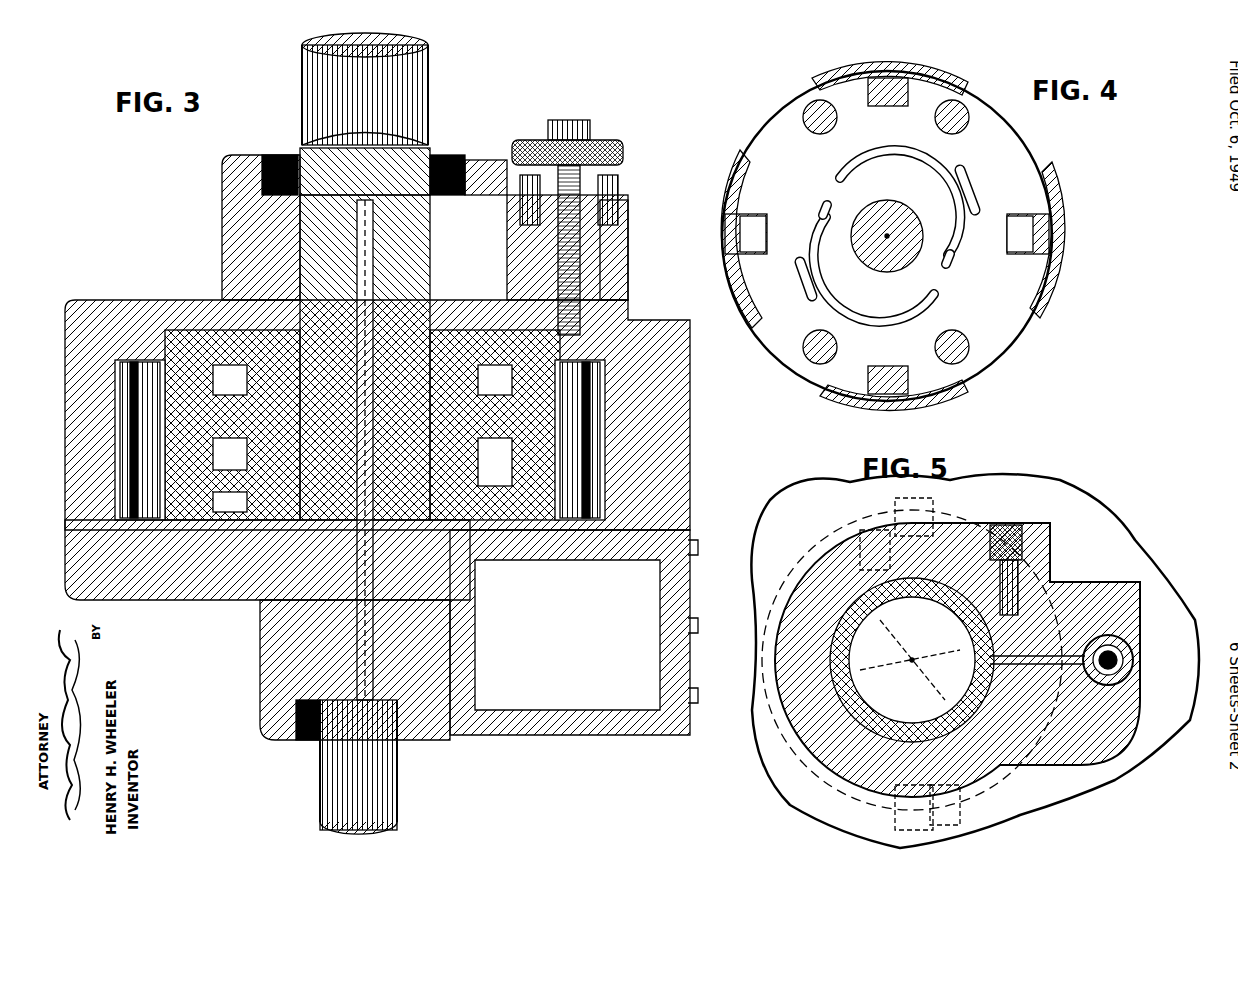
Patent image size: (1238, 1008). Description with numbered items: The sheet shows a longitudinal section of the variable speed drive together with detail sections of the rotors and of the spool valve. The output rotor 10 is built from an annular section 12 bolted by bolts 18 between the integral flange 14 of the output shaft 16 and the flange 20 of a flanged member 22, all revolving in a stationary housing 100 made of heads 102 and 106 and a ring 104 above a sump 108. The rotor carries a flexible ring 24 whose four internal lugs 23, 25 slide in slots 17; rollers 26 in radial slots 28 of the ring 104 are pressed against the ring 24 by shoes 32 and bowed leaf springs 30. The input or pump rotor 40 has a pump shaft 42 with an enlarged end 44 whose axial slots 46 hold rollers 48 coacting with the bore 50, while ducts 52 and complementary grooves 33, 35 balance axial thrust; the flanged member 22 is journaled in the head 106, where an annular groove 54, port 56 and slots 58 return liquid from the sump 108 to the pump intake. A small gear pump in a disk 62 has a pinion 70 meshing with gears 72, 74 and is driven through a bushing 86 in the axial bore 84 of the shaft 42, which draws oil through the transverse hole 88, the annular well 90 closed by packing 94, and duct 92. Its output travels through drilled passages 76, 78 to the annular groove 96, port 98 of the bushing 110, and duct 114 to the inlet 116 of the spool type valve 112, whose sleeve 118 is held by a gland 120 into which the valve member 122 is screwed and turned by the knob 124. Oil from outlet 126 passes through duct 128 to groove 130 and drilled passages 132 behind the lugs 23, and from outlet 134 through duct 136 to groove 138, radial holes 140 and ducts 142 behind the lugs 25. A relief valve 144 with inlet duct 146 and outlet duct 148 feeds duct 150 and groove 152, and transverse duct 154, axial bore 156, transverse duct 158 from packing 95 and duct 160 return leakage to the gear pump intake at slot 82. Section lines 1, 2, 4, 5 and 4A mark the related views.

In FIG. 3, the output rotor 10 is at (298, 78).
In FIG. 3, the annular section 12 is at (150, 600).
In FIG. 3, the integral flange 14 is at (130, 312).
In FIG. 3, the output shaft 16 is at (400, 68).
In FIG. 5, the output shaft 16 is at (900, 612).
In FIG. 4, the slots 17 is at (898, 106).
In FIG. 4, the bolts 18 is at (822, 108).
In FIG. 3, the flange 20 is at (180, 600).
In FIG. 4, the flange 20 is at (790, 135).
In FIG. 3, the flanged member 22 is at (275, 640).
In FIG. 3, the internal lugs 23 is at (300, 345).
In FIG. 4, the internal lugs 23 is at (766, 236).
In FIG. 3, the flexible ring 24 is at (300, 352).
In FIG. 4, the flexible ring 24 is at (830, 78).
In FIG. 4, the internal lugs 25 is at (885, 106).
In FIG. 3, the rollers 26 is at (135, 580).
In FIG. 3, the internal radial slots 28 is at (180, 470).
In FIG. 3, the bowed leaf springs 30 is at (150, 410).
In FIG. 3, the shoe 32 is at (120, 420).
In FIG. 4, the complementary grooves 33 is at (900, 168).
In FIG. 4, the complementary grooves 35 is at (822, 205).
In FIG. 3, the input or pump rotor 40 is at (398, 786).
In FIG. 3, the pump shaft 42 is at (345, 787).
In FIG. 4, the pump shaft 42 is at (885, 205).
In FIG. 3, the enlarged end 44 is at (470, 585).
In FIG. 3, the axial slots 46 is at (362, 490).
In FIG. 3, the rollers 48 is at (515, 600).
In FIG. 3, the bore 50 is at (362, 463).
In FIG. 3, the ducts 52 is at (362, 391).
In FIG. 3, the annular groove 54 is at (250, 610).
In FIG. 3, the port 56 is at (455, 610).
In FIG. 3, the slots 58 is at (480, 560).
In FIG. 4, the slots 58 is at (978, 200).
In FIG. 3, the disk or housing 62 is at (620, 362).
In FIG. 3, the pinion 70 is at (494, 449).
In FIG. 3, the gear 72 is at (120, 300).
In FIG. 3, the gear 74 is at (640, 342).
In FIG. 5, the drilled passage 76 is at (820, 725).
In FIG. 3, the drilled passage 78 is at (245, 252).
In FIG. 5, the drilled passage 78 is at (835, 640).
In FIG. 3, the elongated slot 82 is at (185, 296).
In FIG. 3, the axial bore 84 is at (300, 612).
In FIG. 4, the axial bore 84 is at (895, 243).
In FIG. 3, the bushing 86 is at (215, 585).
In FIG. 3, the transverse hole 88 is at (270, 668).
In FIG. 3, the annular well 90 is at (265, 690).
In FIG. 3, the duct 92 is at (455, 675).
In FIG. 3, the packing 94 is at (304, 740).
In FIG. 3, the packing 95 is at (278, 155).
In FIG. 3, the annular groove 96 is at (240, 225).
In FIG. 3, the port 98 is at (412, 150).
In FIG. 3, the stationary housing 100 is at (488, 736).
In FIG. 3, the head 102 is at (248, 155).
In FIG. 5, the head 102 is at (800, 510).
In FIG. 3, the ring 104 is at (100, 580).
In FIG. 3, the head 106 is at (262, 738).
In FIG. 3, the sump 108 is at (585, 712).
In FIG. 3, the bushing 110 is at (258, 230).
In FIG. 5, the bushing 110 is at (835, 710).
In FIG. 3, the spool type valve 112 is at (592, 124).
In FIG. 3, the duct 114 is at (452, 270).
In FIG. 3, the inlet 116 is at (468, 235).
In FIG. 3, the sleeve 118 is at (620, 240).
In FIG. 5, the sleeve 118 is at (1125, 700).
In FIG. 3, the gland 120 is at (618, 190).
In FIG. 3, the valve member 122 is at (600, 175).
In FIG. 5, the valve member 122 is at (1110, 640).
In FIG. 3, the knob 124 is at (612, 146).
In FIG. 3, the outlet 126 is at (640, 322).
In FIG. 3, the duct 128 is at (445, 285).
In FIG. 3, the annular groove 130 is at (215, 275).
In FIG. 3, the drilled passages 132 is at (363, 376).
In FIG. 5, the drilled passages 132 is at (850, 660).
In FIG. 3, the outlet 134 is at (566, 120).
In FIG. 5, the outlet 134 is at (1118, 650).
In FIG. 3, the duct 136 is at (460, 250).
In FIG. 5, the duct 136 is at (1048, 680).
In FIG. 3, the annular groove 138 is at (412, 112).
In FIG. 5, the annular groove 138 is at (860, 690).
In FIG. 3, the radial holes 140 is at (260, 198).
In FIG. 5, the radial holes 140 is at (880, 798).
In FIG. 3, the ducts 142 is at (250, 212).
In FIG. 5, the ducts 142 is at (909, 664).
In FIG. 5, the relief valve 144 is at (1030, 515).
In FIG. 3, the inlet duct 146 is at (438, 300).
In FIG. 5, the inlet duct 146 is at (1030, 640).
In FIG. 5, the outlet duct 148 is at (1015, 525).
In FIG. 3, the duct 150 is at (408, 128).
In FIG. 5, the duct 150 is at (965, 580).
In FIG. 3, the annular groove 152 is at (150, 290).
In FIG. 3, the transverse duct 154 is at (185, 292).
In FIG. 5, the transverse duct 154 is at (955, 560).
In FIG. 3, the axial bore 156 is at (268, 185).
In FIG. 5, the axial bore 156 is at (870, 730).
In FIG. 3, the transverse duct 158 is at (415, 92).
In FIG. 3, the duct 160 is at (640, 300).
In FIG. 3, the section line 1 is at (42, 520).
In FIG. 3, the section line 2 is at (230, 440).
In FIG. 3, the section line 4 is at (168, 590).
In FIG. 3, the section line 5 is at (300, 240).
In FIG. 4, the section line 4A is at (998, 158).